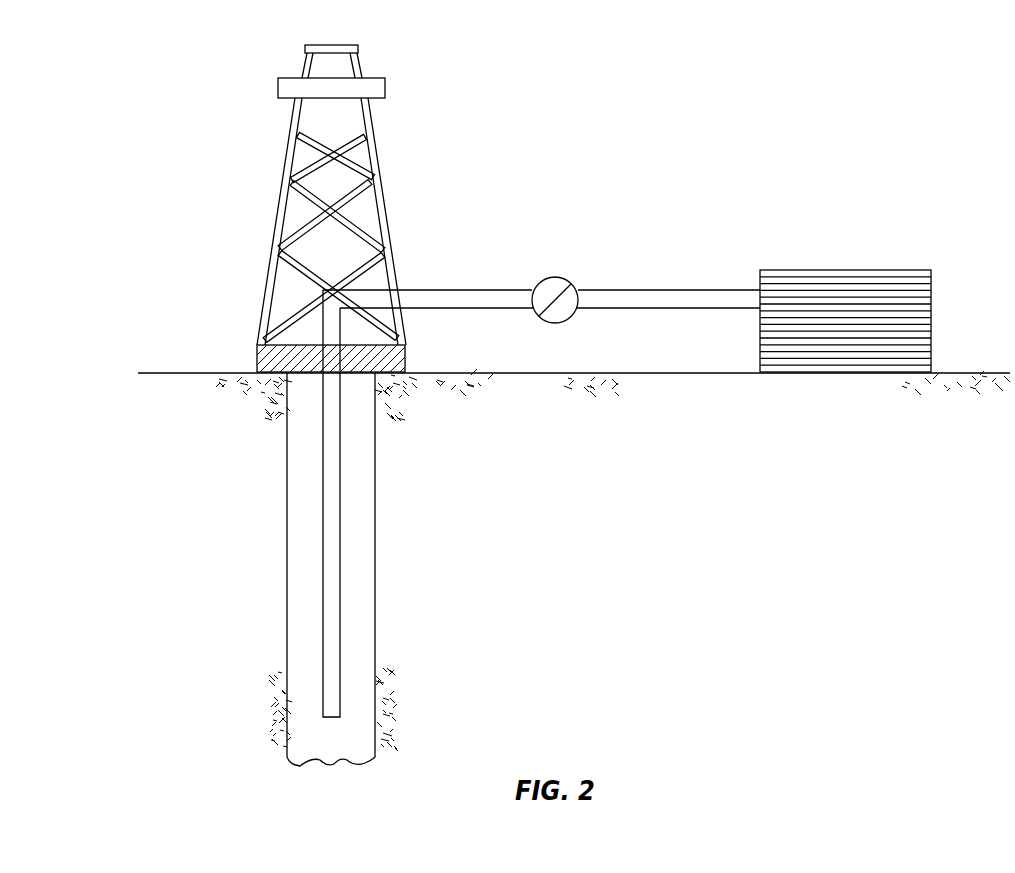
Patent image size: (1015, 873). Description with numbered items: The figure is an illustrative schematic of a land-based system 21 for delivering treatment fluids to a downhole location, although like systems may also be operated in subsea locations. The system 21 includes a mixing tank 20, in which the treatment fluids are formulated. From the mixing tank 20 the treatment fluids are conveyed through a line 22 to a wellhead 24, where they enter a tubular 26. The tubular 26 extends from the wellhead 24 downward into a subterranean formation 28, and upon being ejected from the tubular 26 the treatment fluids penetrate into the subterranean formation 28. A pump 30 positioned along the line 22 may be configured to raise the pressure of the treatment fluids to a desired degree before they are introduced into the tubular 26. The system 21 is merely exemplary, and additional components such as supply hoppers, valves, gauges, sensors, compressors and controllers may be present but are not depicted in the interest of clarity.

The mixing tank 20 is at (920, 270).
The system 21 is at (145, 85).
The line 22 is at (465, 290).
The wellhead 24 is at (255, 357).
The tubular 26 is at (340, 488).
The subterranean formation 28 is at (574, 567).
The pump 30 is at (567, 276).